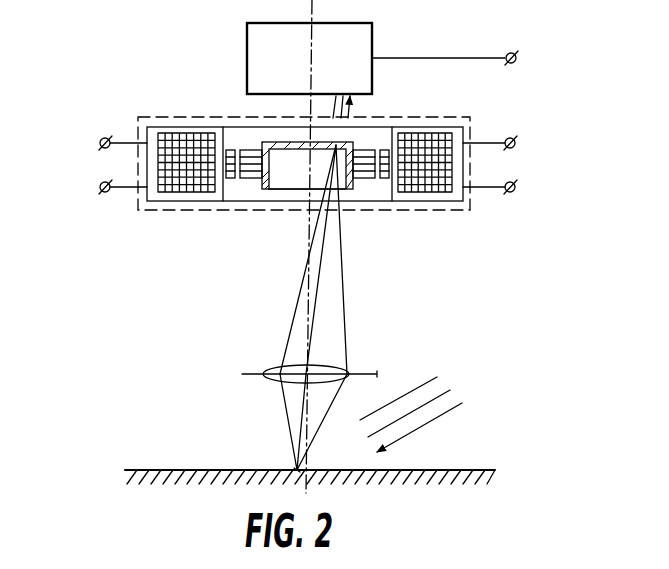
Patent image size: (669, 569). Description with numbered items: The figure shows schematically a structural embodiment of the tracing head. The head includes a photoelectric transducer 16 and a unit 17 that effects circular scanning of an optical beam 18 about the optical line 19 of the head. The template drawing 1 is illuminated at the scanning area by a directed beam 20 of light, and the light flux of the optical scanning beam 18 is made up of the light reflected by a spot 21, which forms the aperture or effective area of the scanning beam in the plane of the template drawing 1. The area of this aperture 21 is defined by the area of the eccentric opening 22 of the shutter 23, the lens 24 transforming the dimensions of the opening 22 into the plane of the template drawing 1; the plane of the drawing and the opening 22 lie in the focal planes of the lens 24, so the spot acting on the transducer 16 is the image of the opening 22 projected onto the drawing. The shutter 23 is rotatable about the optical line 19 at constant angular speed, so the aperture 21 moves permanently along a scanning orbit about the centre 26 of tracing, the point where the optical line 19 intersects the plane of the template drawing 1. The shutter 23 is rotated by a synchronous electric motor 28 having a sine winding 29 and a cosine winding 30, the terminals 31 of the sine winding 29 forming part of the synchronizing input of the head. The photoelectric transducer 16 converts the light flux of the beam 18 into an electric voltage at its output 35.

The template drawing 1 is at (226, 468).
The photoelectric transducer 16 is at (309, 58).
The unit effecting circular scanning 17 is at (449, 117).
The optical scanning beam 18 is at (320, 285).
The optical line 19 is at (310, 298).
The beam of light 20 is at (412, 410).
The spot (aperture of the scanning beam) 21 is at (295, 468).
The eccentric opening 22 is at (515, 182).
The shutter 23 is at (262, 142).
The lens 24 is at (348, 373).
The centre of tracing 26 is at (306, 470).
The synchronous electric motor 28 is at (243, 202).
The sine winding 29 is at (176, 135).
The cosine winding 30 is at (428, 190).
The terminals of the sine winding 31 is at (100, 182).
The output of the transducer 35 is at (398, 57).